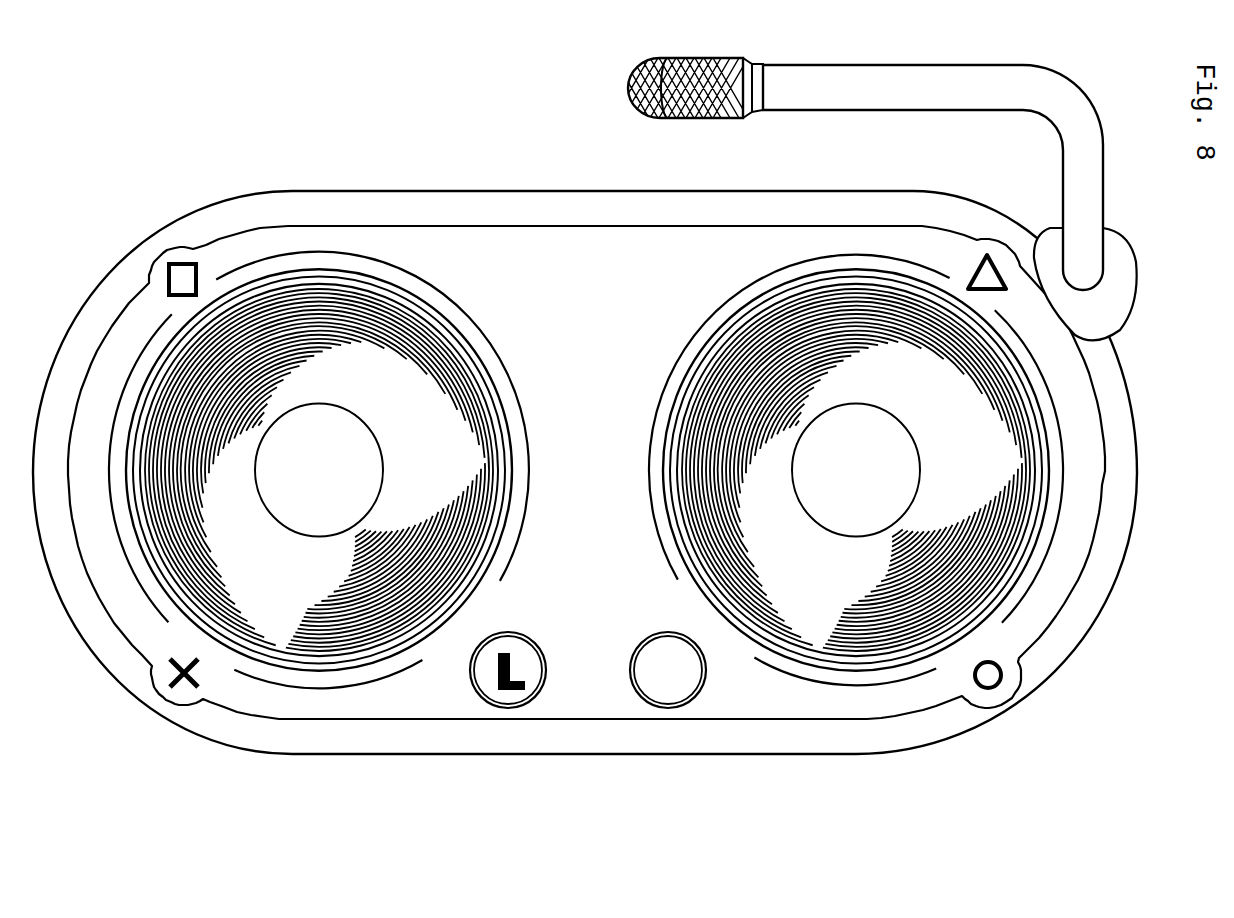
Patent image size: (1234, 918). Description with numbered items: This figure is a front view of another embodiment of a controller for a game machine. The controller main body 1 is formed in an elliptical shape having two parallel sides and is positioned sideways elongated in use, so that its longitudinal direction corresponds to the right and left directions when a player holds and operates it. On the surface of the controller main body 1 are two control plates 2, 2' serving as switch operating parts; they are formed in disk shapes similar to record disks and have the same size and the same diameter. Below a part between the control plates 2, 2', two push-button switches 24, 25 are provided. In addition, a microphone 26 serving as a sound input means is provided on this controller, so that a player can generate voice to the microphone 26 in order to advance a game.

The controller main body 1 is at (388, 730).
The control plate 2 is at (319, 416).
The control plate 2' is at (856, 414).
The push-button switch 24 is at (508, 695).
The push-button switch 25 is at (668, 695).
The microphone 26 is at (680, 58).